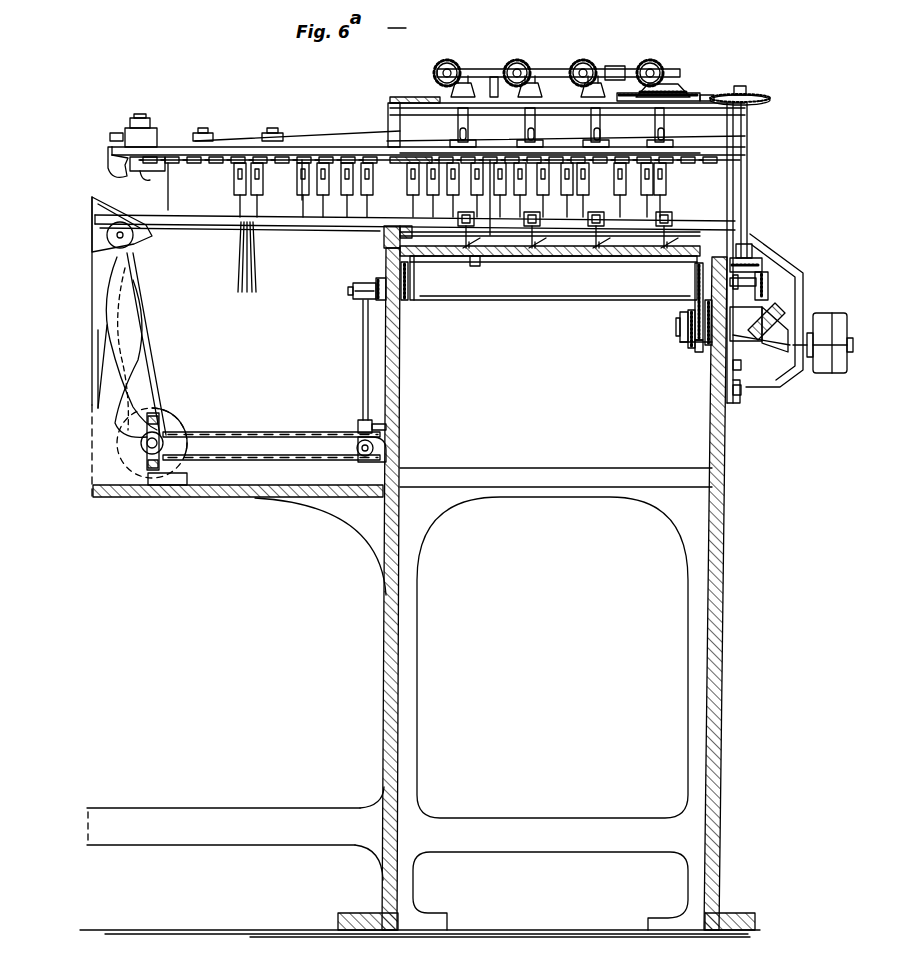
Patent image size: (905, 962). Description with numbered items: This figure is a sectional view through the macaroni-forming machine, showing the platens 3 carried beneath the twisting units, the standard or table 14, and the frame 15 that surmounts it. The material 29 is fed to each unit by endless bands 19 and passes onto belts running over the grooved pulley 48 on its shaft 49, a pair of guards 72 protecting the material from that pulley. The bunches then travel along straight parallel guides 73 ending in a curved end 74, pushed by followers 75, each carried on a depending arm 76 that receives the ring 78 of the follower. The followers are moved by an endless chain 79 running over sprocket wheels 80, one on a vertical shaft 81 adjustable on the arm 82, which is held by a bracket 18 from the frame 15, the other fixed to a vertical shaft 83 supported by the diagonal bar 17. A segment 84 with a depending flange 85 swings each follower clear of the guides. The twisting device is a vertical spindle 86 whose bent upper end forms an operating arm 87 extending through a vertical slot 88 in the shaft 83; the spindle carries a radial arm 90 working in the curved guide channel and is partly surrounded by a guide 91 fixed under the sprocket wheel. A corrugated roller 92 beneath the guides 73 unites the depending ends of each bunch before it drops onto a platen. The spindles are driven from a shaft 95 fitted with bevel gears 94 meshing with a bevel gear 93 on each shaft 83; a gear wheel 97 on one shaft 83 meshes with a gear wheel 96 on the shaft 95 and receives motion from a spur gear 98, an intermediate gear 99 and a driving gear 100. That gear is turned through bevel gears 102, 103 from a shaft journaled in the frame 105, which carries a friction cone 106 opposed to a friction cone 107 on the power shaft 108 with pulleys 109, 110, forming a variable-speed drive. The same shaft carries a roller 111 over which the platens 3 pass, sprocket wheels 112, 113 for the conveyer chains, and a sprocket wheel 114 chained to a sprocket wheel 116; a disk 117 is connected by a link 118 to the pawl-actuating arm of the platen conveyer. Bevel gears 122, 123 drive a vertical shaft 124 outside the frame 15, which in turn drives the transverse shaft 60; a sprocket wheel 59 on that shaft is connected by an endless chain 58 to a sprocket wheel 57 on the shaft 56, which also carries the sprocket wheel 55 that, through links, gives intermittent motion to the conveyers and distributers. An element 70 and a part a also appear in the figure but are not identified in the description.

The platen 3 is at (520, 268).
The standard or frame-work 14 is at (240, 498).
The frame 15 is at (393, 117).
The diagonal bar 17 is at (410, 102).
The bracket 18 is at (720, 163).
The endless bands 19 is at (168, 170).
The material 29 is at (241, 263).
The grooved pulley 48 is at (132, 244).
The shaft 49 is at (100, 245).
The sprocket wheel 55 is at (140, 436).
The shaft 56 is at (165, 435).
The sprocket wheel 57 is at (168, 445).
The endless chain 58 is at (264, 432).
The sprocket wheel 59 is at (357, 430).
The transverse shaft 60 is at (358, 457).
The lever 70 is at (156, 340).
The guards 72 is at (150, 229).
The straight parallel guides 73 is at (278, 221).
The curved end 74 is at (481, 238).
The follower 75 is at (318, 200).
The depending arm 76 is at (234, 178).
The ring 78 is at (240, 176).
The endless chain 79 is at (302, 172).
The sprocket wheels 80 is at (143, 160).
The vertical shaft 81 is at (150, 126).
The arm 82 is at (242, 141).
The vertical shaft 83 is at (458, 124).
The segment 84 is at (108, 160).
The depending flange 85 is at (145, 176).
The spindle 86 is at (462, 257).
The operating arm 87 is at (675, 156).
The vertical slot 88 is at (527, 136).
The radial arm 90 is at (478, 218).
The guide 91 is at (477, 263).
The corrugated roller 92 is at (383, 236).
The bevel gear 93 is at (450, 90).
The bevel gears 94 is at (455, 70).
The shaft 95 is at (579, 70).
The gear wheel 96 is at (651, 67).
The gear wheel 97 is at (668, 88).
The spur gear 98 is at (690, 93).
The intermediate gear 99 is at (714, 96).
The driving gear 100 is at (757, 97).
The bevel gear 102 is at (752, 266).
The bevel gear 103 is at (770, 284).
The frame 105 is at (792, 323).
The friction cone 106 is at (800, 296).
The friction cone 107 is at (787, 355).
The power shaft 108 is at (755, 368).
The operating pulley 109 is at (834, 342).
The operating pulley 110 is at (825, 366).
The roller 111 is at (528, 297).
The sprocket wheel 112 is at (695, 270).
The sprocket wheel 113 is at (405, 299).
The sprocket wheel 114 is at (703, 290).
The sprocket wheel 116 is at (699, 353).
The disk 117 is at (690, 348).
The link 118 is at (679, 338).
The bevel gear 122 is at (378, 277).
The bevel gear 123 is at (356, 286).
The vertical shaft 124 is at (363, 359).
The hatched block a is at (418, 230).